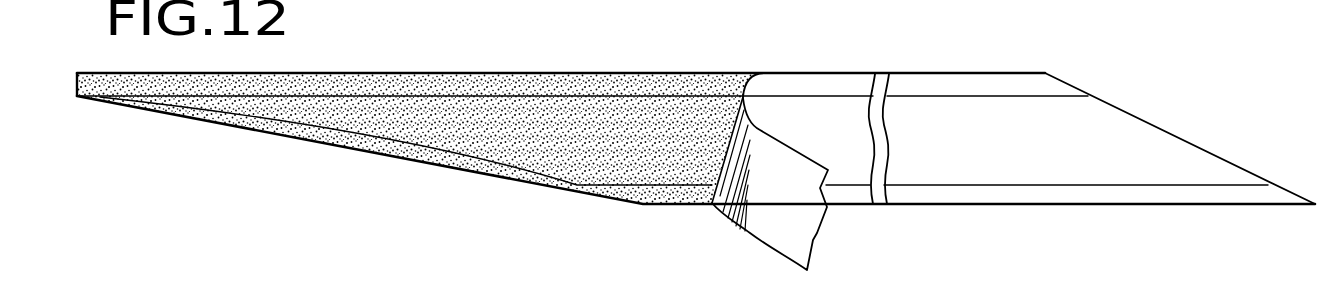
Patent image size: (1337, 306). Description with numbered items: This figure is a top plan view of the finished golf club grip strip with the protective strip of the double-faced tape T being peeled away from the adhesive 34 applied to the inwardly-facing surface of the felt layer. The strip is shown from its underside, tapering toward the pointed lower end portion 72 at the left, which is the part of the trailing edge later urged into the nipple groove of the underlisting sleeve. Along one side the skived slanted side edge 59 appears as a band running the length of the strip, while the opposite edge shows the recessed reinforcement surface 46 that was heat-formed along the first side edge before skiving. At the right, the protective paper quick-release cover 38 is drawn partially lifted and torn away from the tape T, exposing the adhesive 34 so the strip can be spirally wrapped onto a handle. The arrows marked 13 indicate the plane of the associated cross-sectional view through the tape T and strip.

The adhesive 34 is at (553, 125).
The protective paper quick-release cover 38 is at (773, 228).
The recessed reinforcement surface 46 is at (673, 195).
The slanted side edge 59 is at (665, 80).
The pointed lower end portion 72 is at (77, 80).
The section line 13- 13 is at (926, 68).
The double-faced tape T is at (1029, 138).